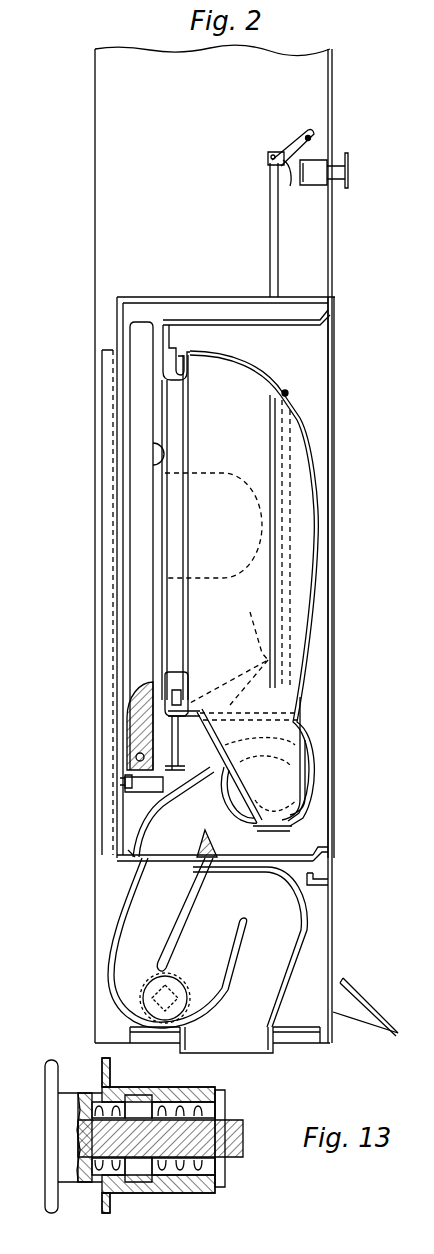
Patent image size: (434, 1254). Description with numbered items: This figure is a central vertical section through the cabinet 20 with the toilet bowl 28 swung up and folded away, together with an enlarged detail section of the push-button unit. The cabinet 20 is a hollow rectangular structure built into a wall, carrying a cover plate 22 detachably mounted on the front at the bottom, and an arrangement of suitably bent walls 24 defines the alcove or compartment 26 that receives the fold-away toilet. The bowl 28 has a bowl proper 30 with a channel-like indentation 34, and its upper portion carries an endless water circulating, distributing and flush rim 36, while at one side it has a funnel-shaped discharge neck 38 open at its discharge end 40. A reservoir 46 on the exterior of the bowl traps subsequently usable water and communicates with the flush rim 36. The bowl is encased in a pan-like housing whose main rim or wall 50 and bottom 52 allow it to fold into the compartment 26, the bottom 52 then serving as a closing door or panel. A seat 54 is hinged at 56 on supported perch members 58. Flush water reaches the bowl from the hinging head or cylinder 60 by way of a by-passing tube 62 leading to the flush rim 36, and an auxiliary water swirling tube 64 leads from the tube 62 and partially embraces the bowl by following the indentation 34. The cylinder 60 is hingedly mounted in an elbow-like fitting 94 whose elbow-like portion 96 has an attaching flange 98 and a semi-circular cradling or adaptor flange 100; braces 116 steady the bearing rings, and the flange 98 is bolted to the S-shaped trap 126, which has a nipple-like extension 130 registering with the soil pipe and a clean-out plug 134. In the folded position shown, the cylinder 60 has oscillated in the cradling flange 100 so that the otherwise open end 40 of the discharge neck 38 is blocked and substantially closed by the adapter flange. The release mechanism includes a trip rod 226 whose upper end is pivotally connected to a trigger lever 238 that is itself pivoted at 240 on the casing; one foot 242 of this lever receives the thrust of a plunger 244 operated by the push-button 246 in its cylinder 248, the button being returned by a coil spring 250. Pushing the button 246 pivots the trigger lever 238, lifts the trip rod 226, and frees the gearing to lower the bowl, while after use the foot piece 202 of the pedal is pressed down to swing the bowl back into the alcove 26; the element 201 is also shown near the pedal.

In FIG. 2, the cabinet 20 is at (343, 81).
In FIG. 2, the cover plate 22 is at (335, 911).
In FIG. 2, the walls 24 is at (152, 297).
In FIG. 2, the alcove or compartment 26 is at (285, 317).
In FIG. 2, the bowl 28 is at (323, 609).
In FIG. 2, the bowl proper 30 is at (260, 372).
In FIG. 2, the channel-like indentation 34 is at (275, 462).
In FIG. 2, the flush rim 36 is at (178, 376).
In FIG. 2, the discharge neck 38 is at (237, 783).
In FIG. 2, the discharge end 40 is at (256, 822).
In FIG. 2, the reservoir 46 is at (205, 580).
In FIG. 2, the main rim or wall of housing 50 is at (219, 320).
In FIG. 2, the bottom of housing 52 is at (336, 390).
In FIG. 2, the seat 54 is at (135, 528).
In FIG. 2, the hinge 56 is at (132, 753).
In FIG. 2, the perch members 58 is at (118, 780).
In FIG. 2, the hinging head or cylinder 60 is at (222, 790).
In FIG. 2, the by-passing tube 62 is at (209, 698).
In FIG. 2, the auxiliary water swirling tube 64 is at (286, 390).
In FIG. 2, the elbow-like fitting 94 is at (203, 762).
In FIG. 2, the elbow-like portion 96 is at (157, 801).
In FIG. 2, the attaching flange 98 is at (130, 855).
In FIG. 2, the cradling or adaptor flange 100 is at (286, 828).
In FIG. 2, the braces 116 is at (150, 783).
In FIG. 2, the S-shaped trap 126 is at (106, 912).
In FIG. 2, the nipple-like extension 130 is at (238, 1041).
In FIG. 2, the clean-out plug 134 is at (173, 988).
In FIG. 2, the blade 201 is at (361, 1020).
In FIG. 2, the foot piece 202 is at (368, 996).
In FIG. 2, the trip rod 226 is at (270, 238).
In FIG. 2, the trigger lever 238 is at (286, 127).
In FIG. 2, the pivot 240 is at (312, 137).
In FIG. 2, the foot of trigger lever 242 is at (290, 186).
In FIG. 13, the plunger 244 is at (240, 1128).
In FIG. 2, the push-button 246 is at (349, 170).
In FIG. 13, the push-button 246 is at (44, 1083).
In FIG. 2, the cylinder 248 is at (318, 182).
In FIG. 13, the cylinder 248 is at (147, 1087).
In FIG. 13, the coil spring 250 is at (171, 1110).